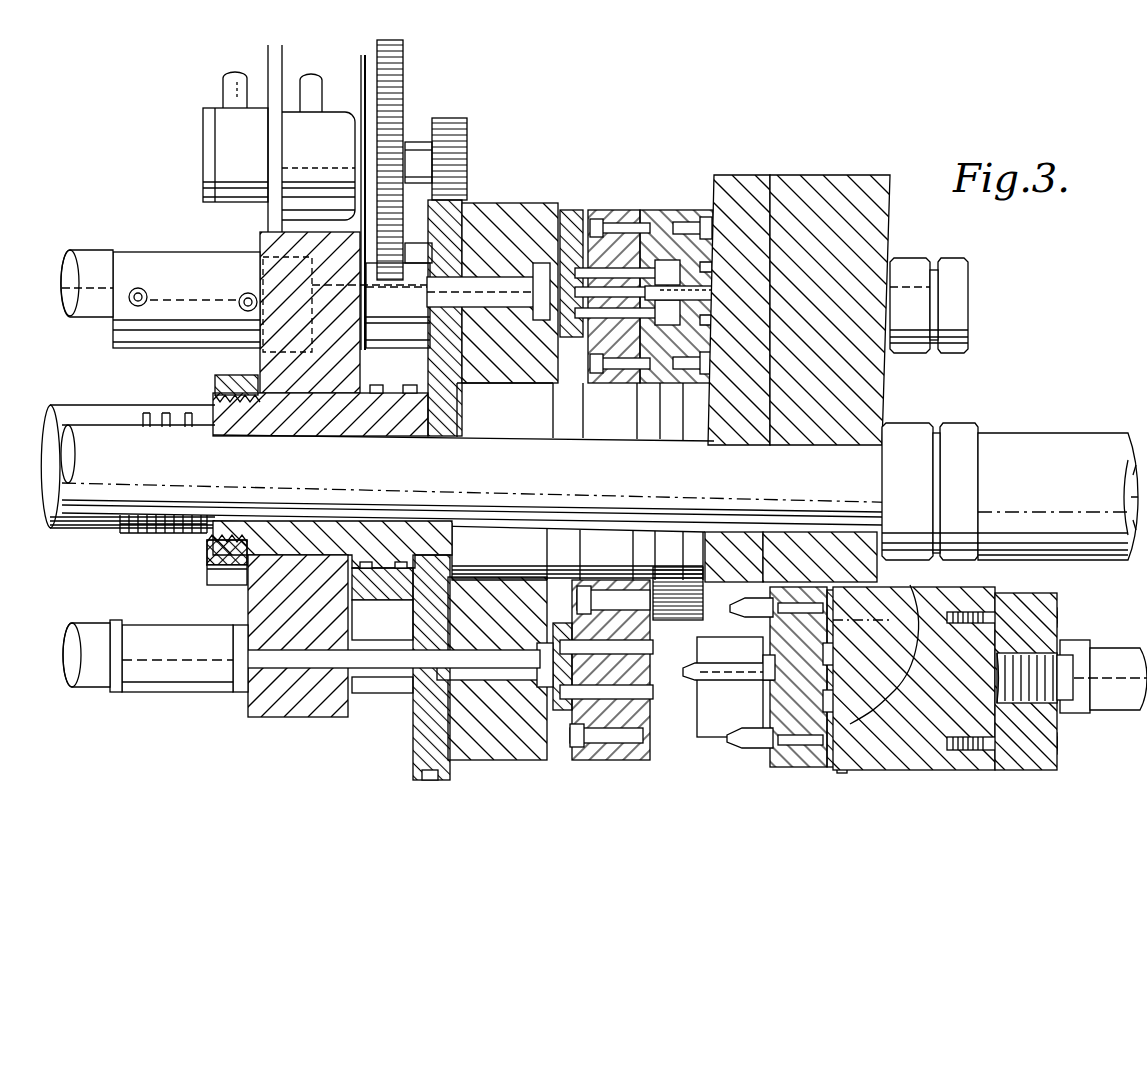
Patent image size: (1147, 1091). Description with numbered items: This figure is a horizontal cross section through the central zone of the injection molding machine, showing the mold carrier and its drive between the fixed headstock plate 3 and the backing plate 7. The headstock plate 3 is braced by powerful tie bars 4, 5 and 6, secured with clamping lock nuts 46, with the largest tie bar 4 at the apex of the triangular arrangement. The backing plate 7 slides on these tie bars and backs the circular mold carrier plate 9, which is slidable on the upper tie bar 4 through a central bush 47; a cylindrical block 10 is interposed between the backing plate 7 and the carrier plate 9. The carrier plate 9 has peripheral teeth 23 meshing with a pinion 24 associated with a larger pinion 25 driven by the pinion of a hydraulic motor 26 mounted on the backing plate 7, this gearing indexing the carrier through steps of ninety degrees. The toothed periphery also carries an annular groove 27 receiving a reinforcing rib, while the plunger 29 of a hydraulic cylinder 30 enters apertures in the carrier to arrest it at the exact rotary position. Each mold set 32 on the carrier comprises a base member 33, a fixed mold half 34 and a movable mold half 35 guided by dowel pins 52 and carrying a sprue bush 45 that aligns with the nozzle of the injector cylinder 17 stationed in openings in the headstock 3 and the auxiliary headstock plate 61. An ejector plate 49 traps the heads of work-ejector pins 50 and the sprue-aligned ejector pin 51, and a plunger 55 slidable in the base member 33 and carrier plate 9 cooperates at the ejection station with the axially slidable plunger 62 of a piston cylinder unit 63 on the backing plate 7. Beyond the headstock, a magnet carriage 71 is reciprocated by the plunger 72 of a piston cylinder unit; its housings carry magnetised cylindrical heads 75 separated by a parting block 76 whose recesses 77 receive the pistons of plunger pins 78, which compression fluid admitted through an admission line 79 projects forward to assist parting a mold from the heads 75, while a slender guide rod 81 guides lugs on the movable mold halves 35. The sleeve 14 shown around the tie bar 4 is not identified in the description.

The fixed headstock plate 3 is at (838, 178).
The tie bar 4 is at (595, 478).
The tie bar 5 is at (93, 255).
The tie bar 6 is at (100, 632).
The front thrust plate (backing plate) 7 is at (298, 727).
The mold carrier plate 9 is at (463, 210).
The cylindrical block 10 is at (393, 600).
The sleeve 14 is at (100, 412).
The injector cylinder 17 is at (1073, 441).
The peripheral teeth 23 is at (440, 780).
The pinion 24 is at (456, 120).
The larger pinion 25 is at (390, 86).
The hydraulic motor 26 is at (238, 131).
The annular groove 27 is at (422, 778).
The plunger 29 is at (290, 284).
The hydraulic cylinder 30 is at (178, 256).
The mold set 32 is at (610, 213).
The base member 33 is at (525, 228).
The fixed mold half 34 is at (620, 388).
The movable mold half 35 is at (683, 215).
The sprue bush 45 is at (712, 282).
The clamping lock nut 46 is at (909, 266).
The central bush 47 is at (213, 540).
The ejector plate 49 is at (570, 237).
The work-ejector pin 50 is at (712, 341).
The ejector pin 51 is at (692, 690).
The dowel pin 52 is at (755, 750).
The plunger 55 is at (497, 300).
The auxiliary headstock plate 61 is at (745, 178).
The axially slidable plunger 62 is at (272, 652).
The piston cylinder unit 63 is at (178, 690).
The magnet carriage 71 is at (1045, 603).
The plunger 72 is at (1105, 657).
The cylindrical head 75 is at (830, 768).
The parting block 76 is at (935, 770).
The recess 77 is at (920, 592).
The plunger pin 78 is at (935, 752).
The admission line 79 is at (841, 778).
The guide rod 81 is at (740, 673).